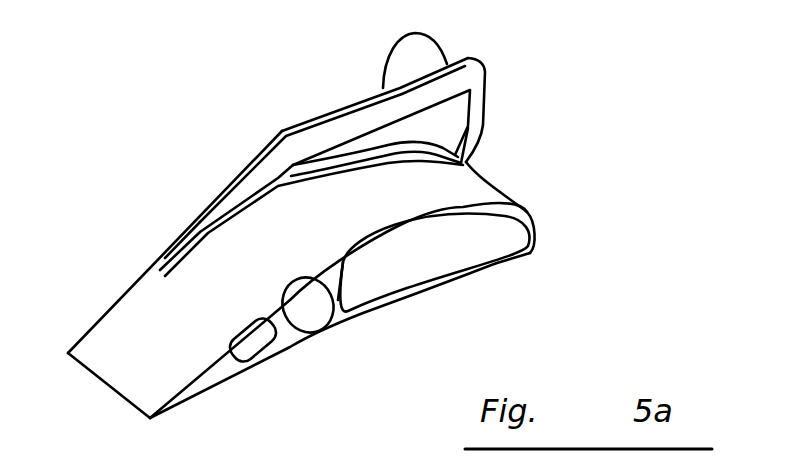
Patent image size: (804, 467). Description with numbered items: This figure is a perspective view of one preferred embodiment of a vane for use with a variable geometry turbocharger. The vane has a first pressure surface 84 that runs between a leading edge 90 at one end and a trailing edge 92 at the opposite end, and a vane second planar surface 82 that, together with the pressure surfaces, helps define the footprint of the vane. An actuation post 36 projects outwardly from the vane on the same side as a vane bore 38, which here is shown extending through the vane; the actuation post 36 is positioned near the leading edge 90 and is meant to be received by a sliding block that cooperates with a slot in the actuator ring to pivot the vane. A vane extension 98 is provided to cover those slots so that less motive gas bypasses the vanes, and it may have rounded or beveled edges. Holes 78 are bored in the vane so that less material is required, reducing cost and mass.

The actuation post 36 is at (433, 53).
The vane extension 98 is at (358, 120).
The leading edge 90 is at (497, 193).
The first pressure surface 84 is at (248, 253).
The holes 78 is at (437, 260).
The vane second planar surface 82 is at (343, 321).
The vane bore 38 is at (307, 310).
The trailing edge 92 is at (112, 393).